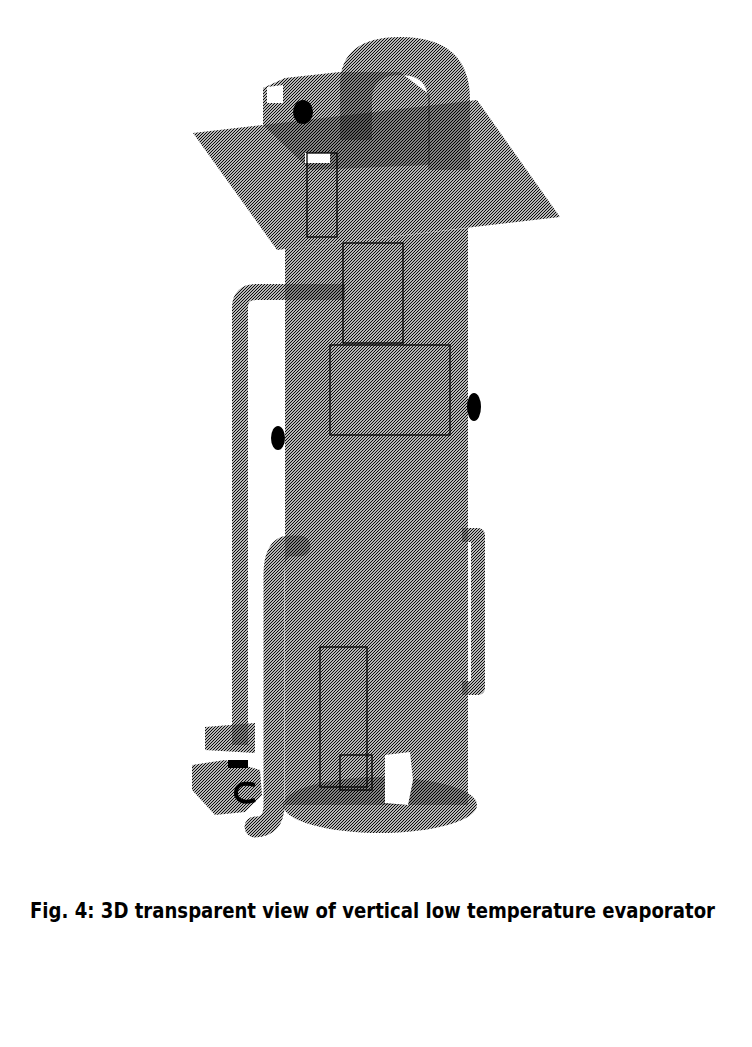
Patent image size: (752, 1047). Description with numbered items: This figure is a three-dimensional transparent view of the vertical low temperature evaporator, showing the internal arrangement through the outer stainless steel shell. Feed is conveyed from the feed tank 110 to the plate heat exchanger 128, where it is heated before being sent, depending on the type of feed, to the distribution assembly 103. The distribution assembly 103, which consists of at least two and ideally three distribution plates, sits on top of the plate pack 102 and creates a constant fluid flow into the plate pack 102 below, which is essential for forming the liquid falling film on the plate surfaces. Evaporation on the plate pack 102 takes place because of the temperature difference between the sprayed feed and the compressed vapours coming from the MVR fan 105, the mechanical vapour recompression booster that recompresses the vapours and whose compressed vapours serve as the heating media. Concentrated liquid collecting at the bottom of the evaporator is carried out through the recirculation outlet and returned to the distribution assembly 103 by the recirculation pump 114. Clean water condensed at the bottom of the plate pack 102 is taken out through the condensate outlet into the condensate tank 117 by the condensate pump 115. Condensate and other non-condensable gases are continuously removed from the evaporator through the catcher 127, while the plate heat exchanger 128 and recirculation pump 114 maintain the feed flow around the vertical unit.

The plate pack 102 is at (433, 372).
The distribution assembly 103 is at (433, 293).
The MVR fan 105 is at (328, 85).
The feed tank 110 is at (450, 593).
The recirculation pump 114 is at (208, 763).
The condensate pump 115 is at (353, 763).
The condensate tank 117 is at (403, 575).
The catcher 127 is at (313, 167).
The plate heat exchanger 128 is at (420, 700).